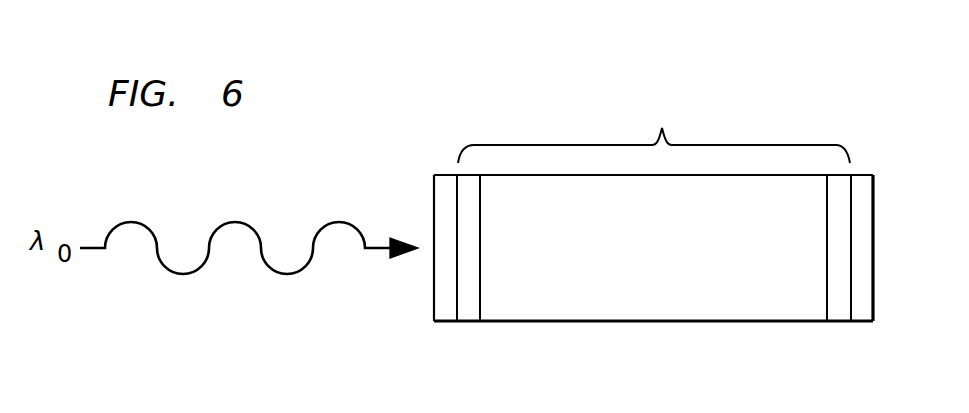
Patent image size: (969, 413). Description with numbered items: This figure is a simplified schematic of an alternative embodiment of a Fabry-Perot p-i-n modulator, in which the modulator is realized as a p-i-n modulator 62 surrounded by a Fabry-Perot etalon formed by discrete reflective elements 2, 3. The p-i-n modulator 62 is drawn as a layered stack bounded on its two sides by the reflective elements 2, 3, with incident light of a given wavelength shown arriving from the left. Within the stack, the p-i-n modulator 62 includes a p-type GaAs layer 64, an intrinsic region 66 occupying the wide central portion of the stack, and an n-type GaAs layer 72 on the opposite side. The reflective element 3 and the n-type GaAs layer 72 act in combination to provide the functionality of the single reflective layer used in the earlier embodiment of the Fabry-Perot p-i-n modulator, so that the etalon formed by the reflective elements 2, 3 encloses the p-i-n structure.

The p-i-n modulator 62 is at (653, 207).
The reflective element 2 is at (446, 313).
The p-type GaAs layer 64 is at (470, 313).
The intrinsic region 66 is at (656, 312).
The n-type GaAs layer 72 is at (840, 312).
The reflective element 3 is at (862, 312).